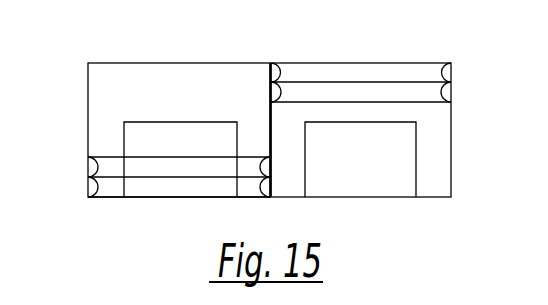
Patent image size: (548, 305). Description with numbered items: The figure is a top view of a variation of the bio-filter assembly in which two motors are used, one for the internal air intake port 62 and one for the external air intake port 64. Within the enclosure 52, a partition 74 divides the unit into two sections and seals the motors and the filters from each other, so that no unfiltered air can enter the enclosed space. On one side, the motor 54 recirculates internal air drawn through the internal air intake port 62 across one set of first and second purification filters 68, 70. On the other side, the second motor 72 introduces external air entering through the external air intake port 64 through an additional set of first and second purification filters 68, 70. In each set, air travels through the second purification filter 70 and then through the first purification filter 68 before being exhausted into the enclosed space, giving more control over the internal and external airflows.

The enclosure 52 is at (151, 63).
The internal air intake port 62 is at (361, 63).
The partition 74 is at (270, 122).
The second motor 72 is at (124, 140).
The motor 54 is at (416, 176).
The external air intake port 64 is at (210, 198).
The first purification filter 68 is at (93, 164).
The second purification filter 70 is at (93, 186).